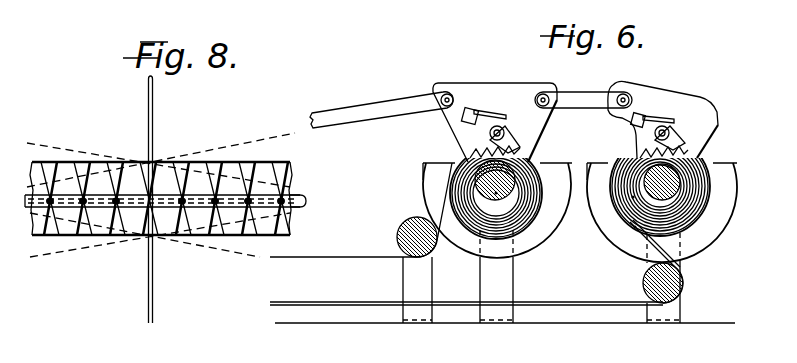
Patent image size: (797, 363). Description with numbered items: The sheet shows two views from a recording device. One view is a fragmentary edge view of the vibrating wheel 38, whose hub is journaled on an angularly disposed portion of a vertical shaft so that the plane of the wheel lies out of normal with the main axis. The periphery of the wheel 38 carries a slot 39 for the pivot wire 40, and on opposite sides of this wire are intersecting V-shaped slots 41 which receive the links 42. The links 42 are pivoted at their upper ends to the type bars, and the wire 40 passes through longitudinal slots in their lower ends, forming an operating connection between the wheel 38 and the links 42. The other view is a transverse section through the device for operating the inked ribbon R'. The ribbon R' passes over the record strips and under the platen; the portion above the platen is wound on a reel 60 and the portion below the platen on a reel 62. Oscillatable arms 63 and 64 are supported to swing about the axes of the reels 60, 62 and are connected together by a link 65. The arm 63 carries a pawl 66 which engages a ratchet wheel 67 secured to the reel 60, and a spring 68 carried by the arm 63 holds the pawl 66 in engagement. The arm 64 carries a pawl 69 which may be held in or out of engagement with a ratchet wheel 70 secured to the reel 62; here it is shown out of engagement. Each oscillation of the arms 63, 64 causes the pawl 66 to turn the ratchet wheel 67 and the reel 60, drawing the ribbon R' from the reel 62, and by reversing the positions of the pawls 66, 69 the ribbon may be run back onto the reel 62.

In FIG. 8, the wheel 38 is at (248, 170).
In FIG. 8, the slot 39 is at (73, 207).
In FIG. 8, the pivot wire 40 is at (307, 195).
In FIG. 8, the intersecting V-shaped slots 41 is at (217, 225).
In FIG. 8, the links 42 is at (148, 112).
In FIG. 6, the reel 60 is at (528, 233).
In FIG. 6, the reel 62 is at (700, 233).
In FIG. 6, the oscillatable arm 63 is at (498, 92).
In FIG. 6, the oscillatable arm 64 is at (663, 97).
In FIG. 6, the link 65 is at (582, 92).
In FIG. 6, the pawl 66 is at (512, 142).
In FIG. 6, the ratchet wheel 67 is at (477, 150).
In FIG. 6, the spring 68 is at (499, 127).
In FIG. 6, the pawl 69 is at (680, 130).
In FIG. 6, the ratchet wheel 70 is at (647, 143).
In FIG. 6, the inked ribbon R' is at (476, 233).